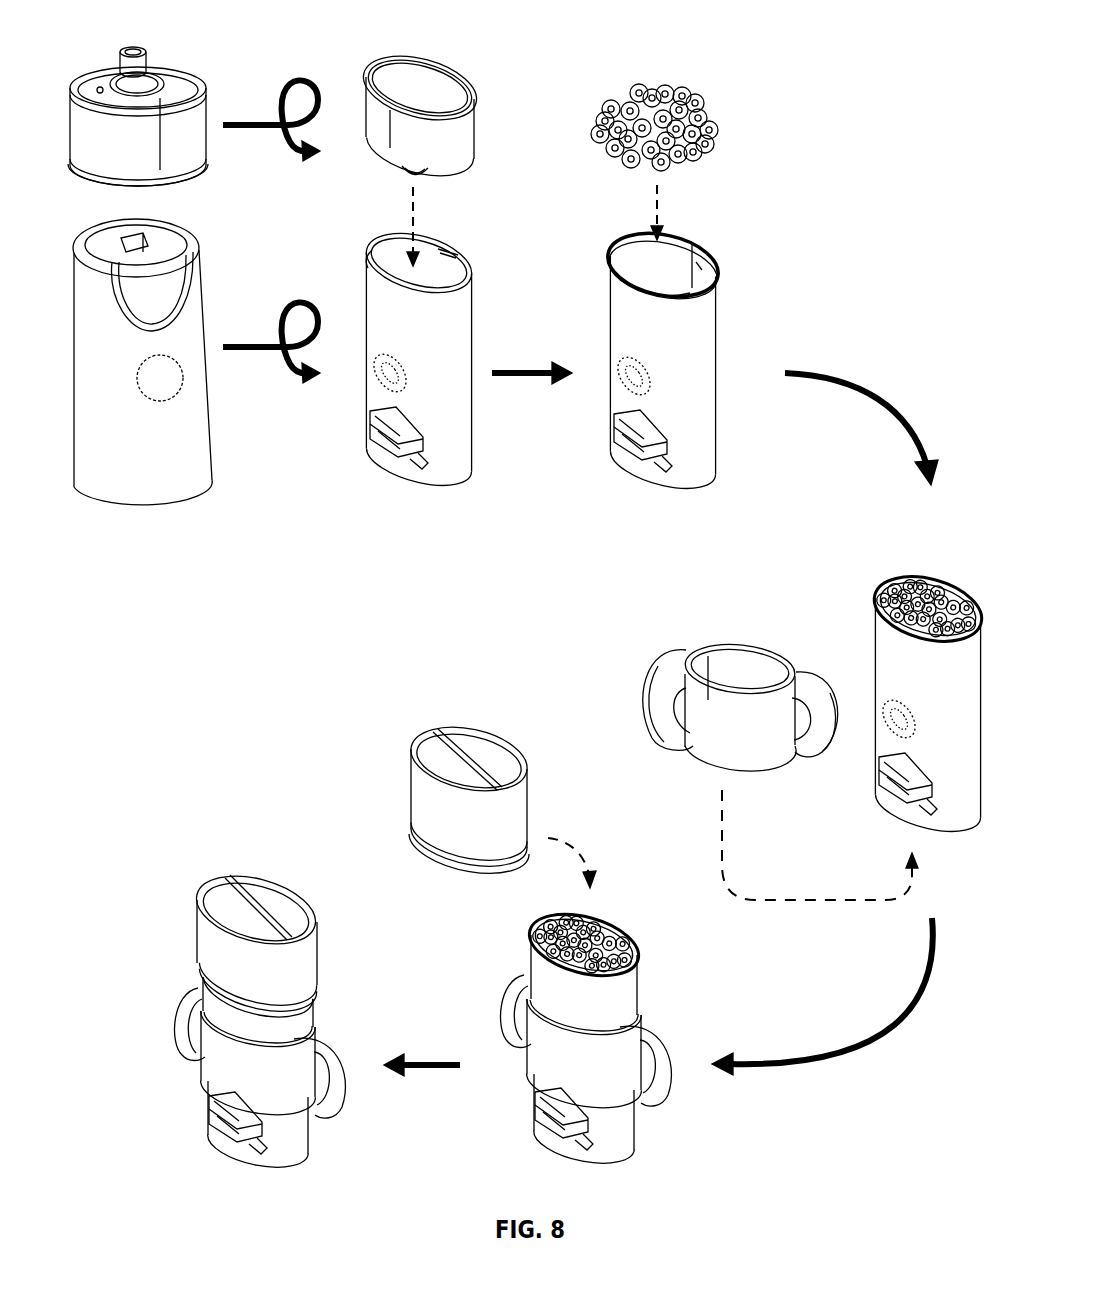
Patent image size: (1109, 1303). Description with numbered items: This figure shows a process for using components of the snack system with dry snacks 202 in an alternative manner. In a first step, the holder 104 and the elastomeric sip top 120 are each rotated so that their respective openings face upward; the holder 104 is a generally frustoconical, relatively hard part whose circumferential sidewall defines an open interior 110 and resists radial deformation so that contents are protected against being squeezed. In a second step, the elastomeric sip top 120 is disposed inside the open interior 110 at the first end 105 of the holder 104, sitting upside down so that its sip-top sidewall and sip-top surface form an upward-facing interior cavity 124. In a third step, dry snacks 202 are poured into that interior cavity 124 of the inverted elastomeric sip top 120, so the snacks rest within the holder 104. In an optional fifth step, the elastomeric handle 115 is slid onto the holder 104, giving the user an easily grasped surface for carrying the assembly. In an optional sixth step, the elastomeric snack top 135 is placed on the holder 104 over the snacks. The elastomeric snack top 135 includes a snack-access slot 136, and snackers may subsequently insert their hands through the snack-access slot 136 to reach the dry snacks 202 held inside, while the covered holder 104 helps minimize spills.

The holder 104 is at (119, 466).
The first end 105 is at (358, 254).
The open interior 110 is at (466, 266).
The elastomeric handle 115 is at (714, 739).
The elastomeric sip top 120 is at (97, 159).
The interior cavity 124 is at (708, 262).
The elastomeric snack top 135 is at (448, 839).
The snack-access slot 136 is at (265, 900).
The dry snacks 202 is at (700, 78).